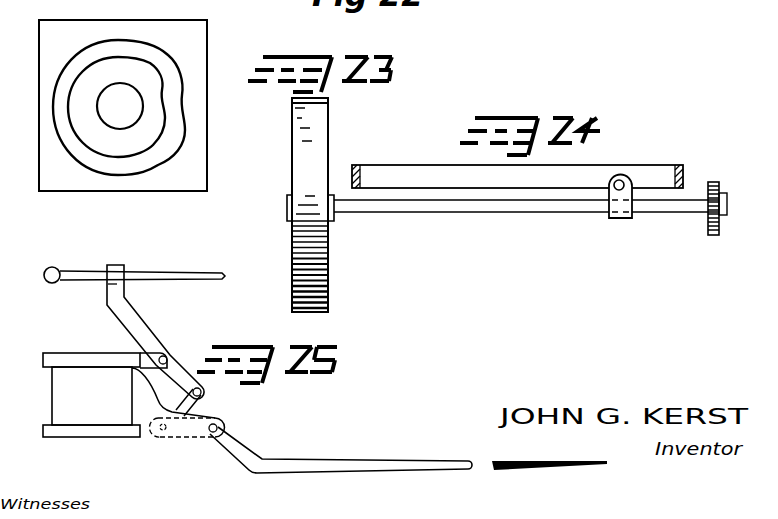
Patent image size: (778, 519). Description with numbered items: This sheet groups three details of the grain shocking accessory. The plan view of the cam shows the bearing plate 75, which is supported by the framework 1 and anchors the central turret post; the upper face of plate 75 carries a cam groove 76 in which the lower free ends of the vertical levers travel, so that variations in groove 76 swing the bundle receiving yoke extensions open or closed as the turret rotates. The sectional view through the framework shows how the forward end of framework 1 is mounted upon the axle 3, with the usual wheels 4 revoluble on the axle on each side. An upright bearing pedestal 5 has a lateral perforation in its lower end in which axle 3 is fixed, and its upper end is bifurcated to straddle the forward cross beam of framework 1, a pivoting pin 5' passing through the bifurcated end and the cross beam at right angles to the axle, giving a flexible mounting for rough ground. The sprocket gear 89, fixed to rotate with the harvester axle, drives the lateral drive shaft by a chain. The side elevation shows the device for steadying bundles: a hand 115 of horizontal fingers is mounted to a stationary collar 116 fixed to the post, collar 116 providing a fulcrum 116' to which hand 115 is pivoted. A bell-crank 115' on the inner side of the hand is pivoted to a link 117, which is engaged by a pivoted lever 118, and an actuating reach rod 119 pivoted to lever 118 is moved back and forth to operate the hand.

In FIG. 24, the framework 1 is at (596, 170).
In FIG. 24, the axle 3 is at (516, 213).
In FIG. 23, the wheels 4 is at (295, 160).
In FIG. 24, the upright bearing pedestal 5 is at (648, 171).
In FIG. 24, the pivoting pin 5' is at (635, 155).
In FIG. 24, the sprocket gear 89 is at (712, 236).
In FIG. 22, the bearing plate 75 is at (194, 43).
In FIG. 22, the cam groove 76 is at (122, 45).
In FIG. 25, the hand 115 is at (341, 450).
In FIG. 25, the bell-crank 115' is at (173, 427).
In FIG. 25, the stationary collar 116 is at (105, 379).
In FIG. 25, the fulcrum 116' is at (204, 455).
In FIG. 25, the link 117 is at (203, 404).
In FIG. 25, the pivoted lever 118 is at (145, 347).
In FIG. 25, the actuating reach rod 119 is at (203, 262).